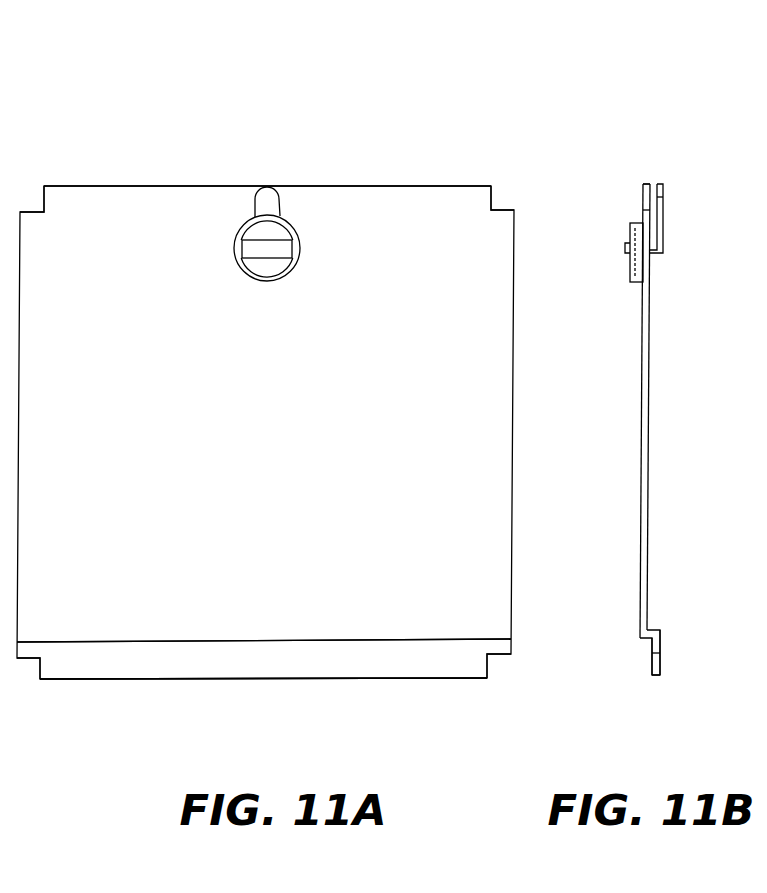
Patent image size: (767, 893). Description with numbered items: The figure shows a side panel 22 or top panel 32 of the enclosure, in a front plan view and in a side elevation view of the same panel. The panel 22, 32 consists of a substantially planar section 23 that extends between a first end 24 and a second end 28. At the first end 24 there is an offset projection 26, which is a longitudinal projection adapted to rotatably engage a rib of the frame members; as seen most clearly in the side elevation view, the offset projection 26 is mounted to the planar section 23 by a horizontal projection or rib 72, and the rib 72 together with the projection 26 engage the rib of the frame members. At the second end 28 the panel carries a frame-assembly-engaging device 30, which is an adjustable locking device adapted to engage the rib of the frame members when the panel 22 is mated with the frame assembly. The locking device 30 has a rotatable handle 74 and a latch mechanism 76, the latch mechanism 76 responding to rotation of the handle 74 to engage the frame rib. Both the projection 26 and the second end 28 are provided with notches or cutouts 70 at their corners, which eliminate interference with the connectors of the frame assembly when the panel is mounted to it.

In FIG. 11A, the side panel 22 is at (265, 344).
In FIG. 11B, the side panel 22 is at (693, 411).
In FIG. 11A, the top panel 32 is at (261, 84).
In FIG. 11B, the top panel 32 is at (650, 430).
In FIG. 11A, the planar section 23 is at (280, 431).
In FIG. 11A, the second end 28 is at (301, 160).
In FIG. 11B, the second end 28 is at (657, 156).
In FIG. 11A, the notches or cutouts 70 is at (33, 212).
In FIG. 11A, the frame-assembly-engaging device 30 is at (207, 270).
In FIG. 11B, the frame-assembly-engaging device 30 is at (586, 241).
In FIG. 11A, the rotatable handle 74 is at (266, 282).
In FIG. 11B, the rotatable handle 74 is at (637, 221).
In FIG. 11B, the latch mechanism 76 is at (668, 223).
In FIG. 11B, the horizontal projection or rib 72 is at (652, 630).
In FIG. 11A, the offset projection 26 is at (275, 655).
In FIG. 11B, the offset projection 26 is at (657, 648).
In FIG. 11A, the first end 24 is at (150, 704).
In FIG. 11B, the first end 24 is at (640, 705).